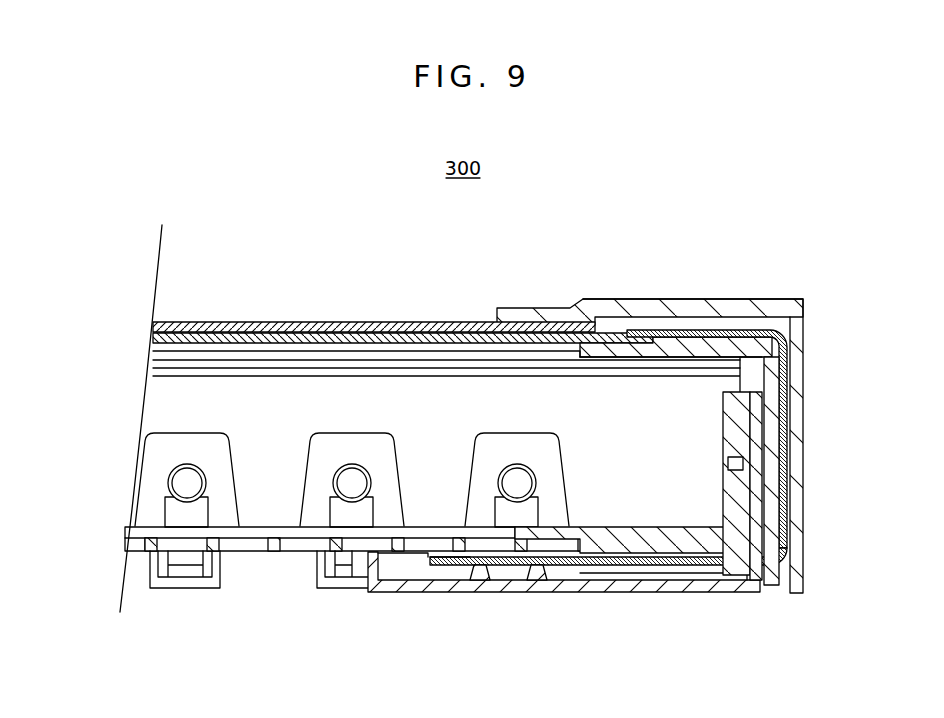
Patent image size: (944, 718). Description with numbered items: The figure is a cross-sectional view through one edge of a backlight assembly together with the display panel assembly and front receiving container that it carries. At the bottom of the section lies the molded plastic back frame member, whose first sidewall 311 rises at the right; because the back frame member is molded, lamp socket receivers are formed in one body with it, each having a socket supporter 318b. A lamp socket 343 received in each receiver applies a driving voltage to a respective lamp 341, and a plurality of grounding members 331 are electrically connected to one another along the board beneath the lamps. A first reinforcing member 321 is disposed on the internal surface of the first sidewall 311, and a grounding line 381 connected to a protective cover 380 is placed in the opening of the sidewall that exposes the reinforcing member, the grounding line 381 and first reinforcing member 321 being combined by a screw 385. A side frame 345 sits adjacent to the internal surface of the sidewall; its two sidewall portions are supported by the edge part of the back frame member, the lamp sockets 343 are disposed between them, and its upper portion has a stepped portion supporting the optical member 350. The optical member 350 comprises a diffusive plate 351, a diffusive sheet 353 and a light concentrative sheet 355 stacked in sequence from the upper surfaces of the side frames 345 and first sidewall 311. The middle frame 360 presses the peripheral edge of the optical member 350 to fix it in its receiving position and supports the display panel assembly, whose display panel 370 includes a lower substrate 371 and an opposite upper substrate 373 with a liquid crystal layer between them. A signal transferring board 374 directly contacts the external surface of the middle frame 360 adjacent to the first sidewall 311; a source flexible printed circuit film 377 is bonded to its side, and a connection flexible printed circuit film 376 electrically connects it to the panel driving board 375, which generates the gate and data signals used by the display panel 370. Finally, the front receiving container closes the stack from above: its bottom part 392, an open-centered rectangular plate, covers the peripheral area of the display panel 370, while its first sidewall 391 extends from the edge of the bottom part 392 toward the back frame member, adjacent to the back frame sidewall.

The first sidewall 311 is at (745, 400).
The socket supporter 318b is at (180, 588).
The first reinforcing member 321 is at (756, 430).
The grounding member 331 is at (268, 551).
The lamp 341 is at (173, 480).
The lamp socket 343 is at (173, 510).
The side frame 345 is at (173, 408).
The optical member 350 is at (388, 361).
The diffusive plate 351 is at (153, 372).
The diffusive sheet 353 is at (155, 361).
The light concentrative sheet 355 is at (157, 351).
The middle frame 360 is at (757, 348).
The display panel 370 is at (403, 280).
The lower substrate 371 is at (400, 249).
The upper substrate 373 is at (384, 323).
The signal transferring board 374 is at (772, 455).
The panel driving board 375 is at (440, 565).
The connection flexible printed circuit film 376 is at (775, 560).
The source flexible printed circuit film 377 is at (788, 375).
The protective cover 380 is at (640, 592).
The grounding line 381 is at (755, 518).
The screw 385 is at (745, 466).
The first sidewall of front receiving container 391 is at (803, 320).
The bottom part of front receiving container 392 is at (785, 300).